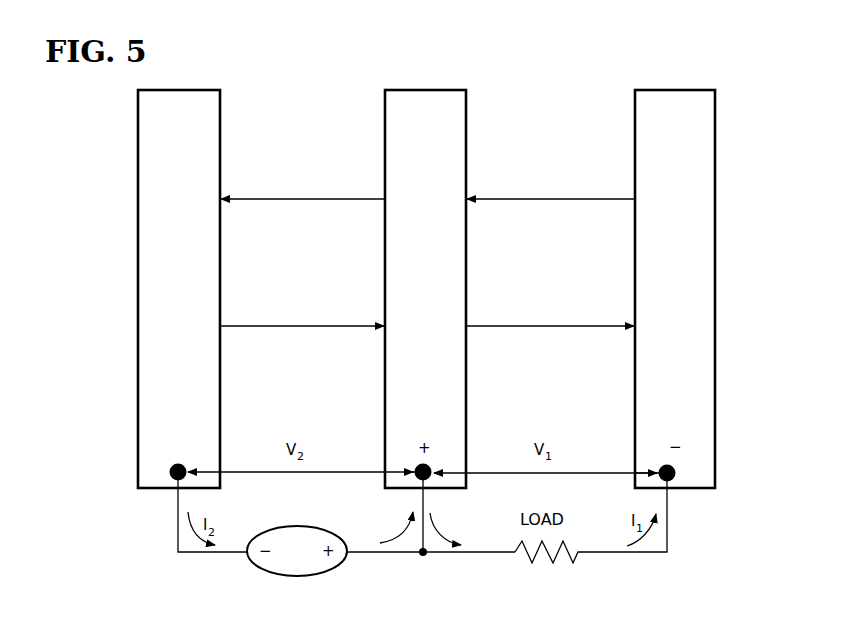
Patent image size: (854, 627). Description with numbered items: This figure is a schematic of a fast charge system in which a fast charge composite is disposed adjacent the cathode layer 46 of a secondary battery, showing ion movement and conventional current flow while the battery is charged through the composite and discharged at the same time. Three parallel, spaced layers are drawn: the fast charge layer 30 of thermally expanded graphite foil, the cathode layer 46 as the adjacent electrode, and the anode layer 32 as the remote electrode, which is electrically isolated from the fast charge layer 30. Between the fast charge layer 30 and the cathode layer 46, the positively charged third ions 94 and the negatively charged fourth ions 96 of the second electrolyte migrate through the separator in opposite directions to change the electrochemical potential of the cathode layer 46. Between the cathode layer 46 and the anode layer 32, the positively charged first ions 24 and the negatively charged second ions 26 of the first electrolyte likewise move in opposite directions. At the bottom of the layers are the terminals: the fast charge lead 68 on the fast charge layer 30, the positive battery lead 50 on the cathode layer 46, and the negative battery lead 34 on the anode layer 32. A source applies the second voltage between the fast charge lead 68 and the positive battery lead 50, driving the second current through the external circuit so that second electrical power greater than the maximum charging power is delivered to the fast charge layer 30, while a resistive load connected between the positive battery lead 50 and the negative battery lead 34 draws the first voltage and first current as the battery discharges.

The fast charge layer 30 is at (179, 289).
The cathode layer 46 is at (425, 289).
The anode layer 32 is at (675, 289).
The third ions 94 is at (303, 197).
The fourth ions 96 is at (298, 325).
The first ions 24 is at (538, 197).
The second ions 26 is at (534, 325).
The fast charge lead 68 is at (170, 471).
The positive battery lead 50 is at (430, 466).
The negative battery lead 34 is at (676, 470).